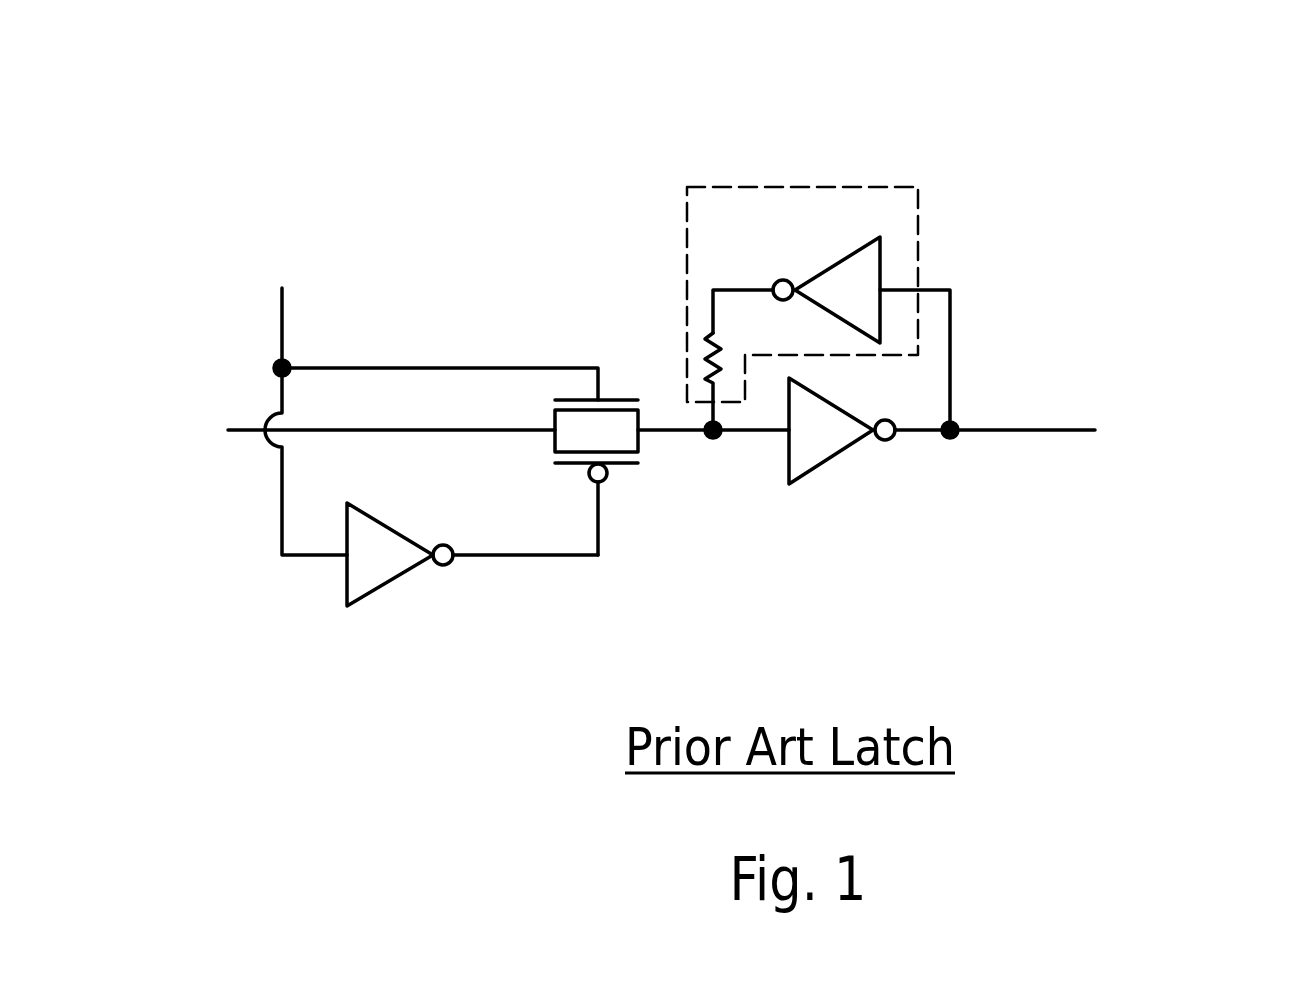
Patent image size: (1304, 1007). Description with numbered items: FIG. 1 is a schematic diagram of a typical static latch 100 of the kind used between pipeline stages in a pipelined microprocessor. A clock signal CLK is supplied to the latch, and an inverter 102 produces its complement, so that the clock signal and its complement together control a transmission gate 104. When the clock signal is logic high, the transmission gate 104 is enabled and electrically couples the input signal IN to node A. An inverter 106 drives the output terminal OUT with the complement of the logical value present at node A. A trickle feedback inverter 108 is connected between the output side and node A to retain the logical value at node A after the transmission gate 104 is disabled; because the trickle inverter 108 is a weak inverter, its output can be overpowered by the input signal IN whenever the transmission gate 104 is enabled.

The prior art latch 100 is at (720, 383).
The inverter 102 is at (398, 577).
The transmission gate 104 is at (640, 452).
The inverter 106 is at (838, 453).
The trickle feedback inverter 108 is at (778, 245).